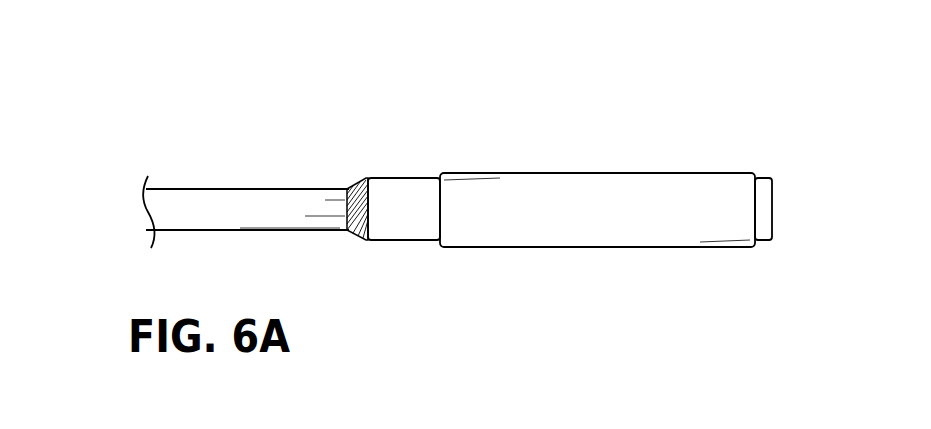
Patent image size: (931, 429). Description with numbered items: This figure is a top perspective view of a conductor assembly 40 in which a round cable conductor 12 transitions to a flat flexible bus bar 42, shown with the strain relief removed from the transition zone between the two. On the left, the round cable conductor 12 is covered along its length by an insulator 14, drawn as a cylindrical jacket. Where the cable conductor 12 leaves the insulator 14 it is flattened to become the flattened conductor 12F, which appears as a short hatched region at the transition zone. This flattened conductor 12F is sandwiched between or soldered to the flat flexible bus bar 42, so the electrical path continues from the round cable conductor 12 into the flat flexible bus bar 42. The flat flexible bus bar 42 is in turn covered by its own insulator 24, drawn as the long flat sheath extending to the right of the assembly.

The conductor assembly 40 is at (185, 109).
The round cable conductor 12 is at (143, 212).
The insulator 14 is at (248, 188).
The flattened conductor 12F is at (362, 232).
The flat flexible bus bar 42 is at (405, 178).
The insulator 24 is at (572, 190).